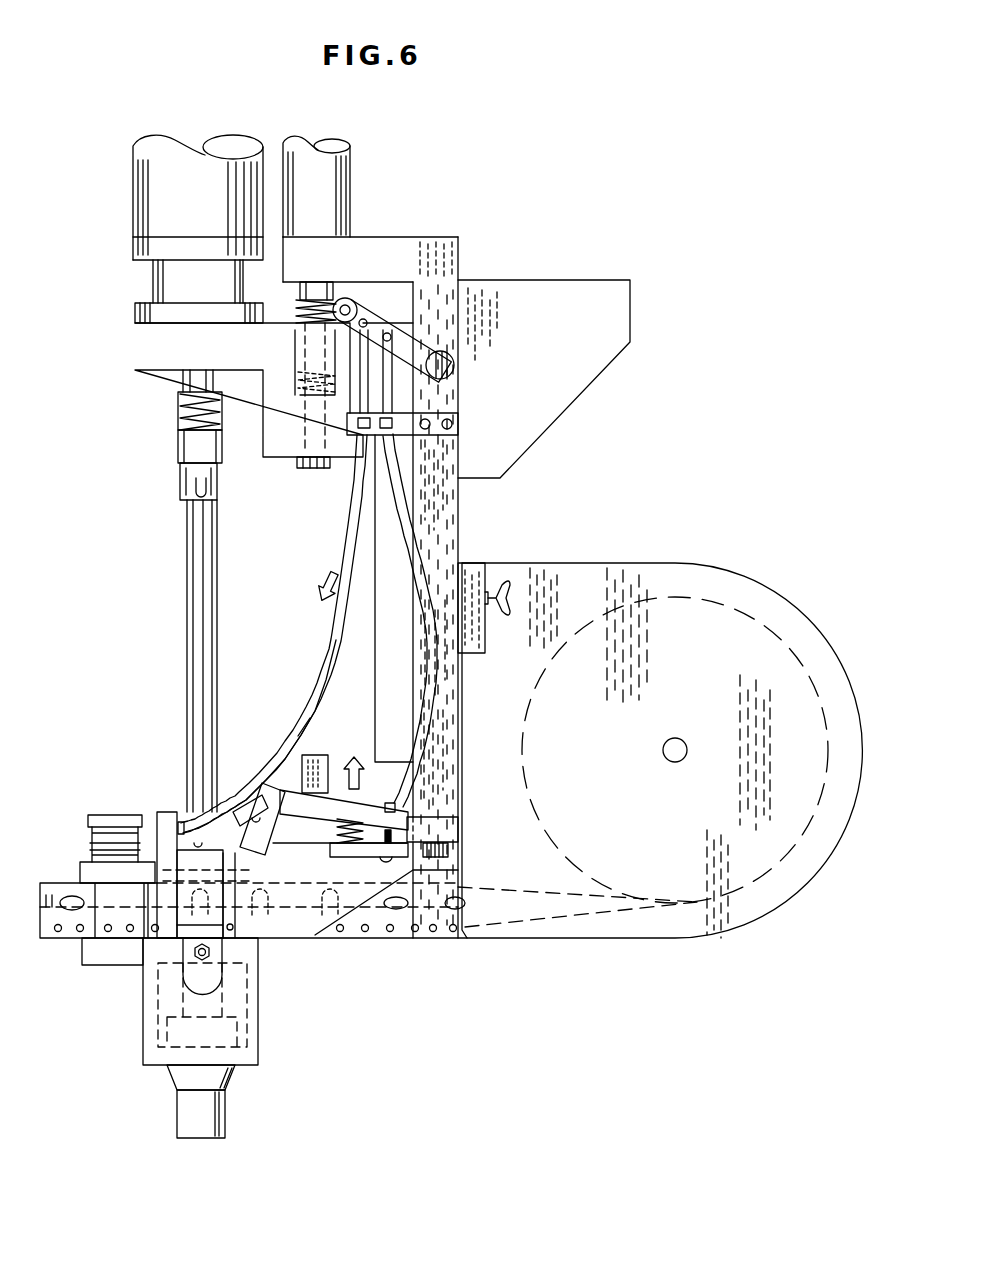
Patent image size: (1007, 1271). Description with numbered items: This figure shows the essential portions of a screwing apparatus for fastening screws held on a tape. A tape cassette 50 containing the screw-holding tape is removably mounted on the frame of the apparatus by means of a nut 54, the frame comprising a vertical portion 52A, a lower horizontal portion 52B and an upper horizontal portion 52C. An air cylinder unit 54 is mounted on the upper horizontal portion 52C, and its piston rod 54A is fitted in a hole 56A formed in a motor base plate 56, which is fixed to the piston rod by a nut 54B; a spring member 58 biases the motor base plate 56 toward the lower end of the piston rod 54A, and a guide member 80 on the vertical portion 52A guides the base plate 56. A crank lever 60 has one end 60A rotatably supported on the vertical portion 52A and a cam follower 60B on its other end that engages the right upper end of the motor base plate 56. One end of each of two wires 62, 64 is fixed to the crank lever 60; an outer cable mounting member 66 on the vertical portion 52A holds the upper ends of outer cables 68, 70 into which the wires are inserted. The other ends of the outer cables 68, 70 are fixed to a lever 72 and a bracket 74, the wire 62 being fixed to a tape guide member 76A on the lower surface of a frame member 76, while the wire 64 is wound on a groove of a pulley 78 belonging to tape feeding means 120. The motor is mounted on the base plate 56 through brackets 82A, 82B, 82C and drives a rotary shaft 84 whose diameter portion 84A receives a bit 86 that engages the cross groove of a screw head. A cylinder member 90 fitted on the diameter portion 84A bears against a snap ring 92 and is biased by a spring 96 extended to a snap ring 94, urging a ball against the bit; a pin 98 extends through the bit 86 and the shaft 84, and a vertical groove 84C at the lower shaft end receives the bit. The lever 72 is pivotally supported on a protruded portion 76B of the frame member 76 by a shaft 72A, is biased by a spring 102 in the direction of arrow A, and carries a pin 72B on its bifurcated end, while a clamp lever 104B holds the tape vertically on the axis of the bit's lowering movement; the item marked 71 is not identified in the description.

The tape cassette 50 is at (710, 710).
The vertical portion 52A is at (460, 502).
The lower horizontal portion 52B is at (300, 940).
The upper horizontal portion 52C is at (430, 245).
The air cylinder unit 54 is at (337, 180).
The piston rod 54A is at (322, 298).
The nut 54B is at (312, 470).
The motor base plate 56 is at (136, 352).
The hole 56A is at (296, 354).
The spring member 58 is at (305, 320).
The crank lever 60 is at (418, 330).
The end of crank lever 60A is at (447, 358).
The cam follower 60B is at (350, 298).
The wire 62 is at (405, 395).
The wire 64 is at (435, 432).
The outer cable mounting member 66 is at (353, 477).
The outer cable 68 is at (330, 645).
The outer cable 70 is at (432, 600).
The cable end 71 is at (308, 720).
The lever 72 is at (338, 790).
The shaft 72A is at (263, 805).
The pin 72B is at (177, 812).
The bracket 74 is at (83, 880).
The frame member 76 is at (447, 828).
The tape guide member 76A is at (362, 858).
The protruded portion 76B is at (283, 790).
The pulley 78 is at (116, 815).
The guide member 80 is at (382, 670).
The bracket 82A is at (172, 292).
The bracket 82B is at (165, 250).
The bracket 82C is at (136, 315).
The rotary shaft 84 is at (192, 382).
The diameter portion 84A is at (190, 522).
The vertical groove 84C is at (216, 486).
The bit 86 is at (186, 625).
The cylinder member 90 is at (192, 472).
The snap ring 92 is at (192, 492).
The snap ring 94 is at (190, 410).
The spring 96 is at (193, 442).
The pin 98 is at (212, 522).
The spring 102 is at (342, 832).
The clamp lever 104B is at (192, 858).
The tape feeding means 120 is at (118, 730).